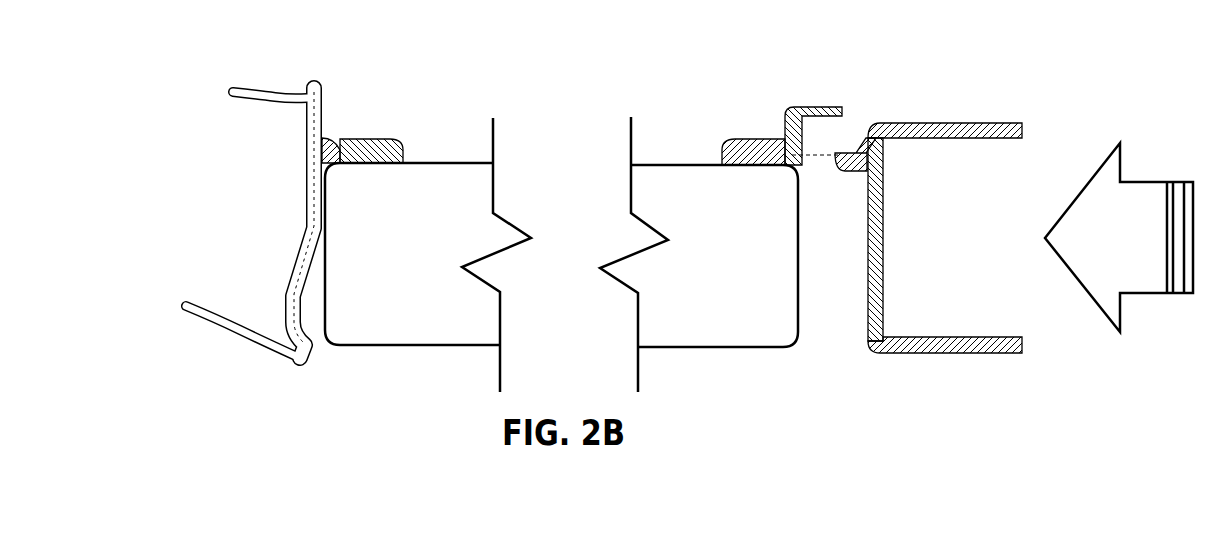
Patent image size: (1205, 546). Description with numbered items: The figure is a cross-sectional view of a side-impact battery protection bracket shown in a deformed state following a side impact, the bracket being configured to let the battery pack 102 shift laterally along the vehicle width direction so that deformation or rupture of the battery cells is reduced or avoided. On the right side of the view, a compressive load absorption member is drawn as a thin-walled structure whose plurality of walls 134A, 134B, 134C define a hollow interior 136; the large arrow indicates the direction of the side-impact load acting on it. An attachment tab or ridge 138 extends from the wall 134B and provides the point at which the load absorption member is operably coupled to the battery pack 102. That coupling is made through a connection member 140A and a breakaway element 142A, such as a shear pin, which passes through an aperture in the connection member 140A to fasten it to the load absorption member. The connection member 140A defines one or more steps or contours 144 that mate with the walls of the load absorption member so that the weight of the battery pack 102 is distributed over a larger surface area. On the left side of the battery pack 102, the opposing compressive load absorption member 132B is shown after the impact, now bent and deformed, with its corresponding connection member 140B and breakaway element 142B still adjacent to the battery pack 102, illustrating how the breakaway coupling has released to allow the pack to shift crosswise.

The battery pack 102 is at (755, 256).
The compressive load absorption member 132B is at (258, 90).
The wall 134A is at (942, 123).
The wall 134B is at (868, 283).
The wall 134C is at (947, 353).
The hollow interior 136 is at (932, 241).
The attachment tab or ridge 138 is at (866, 152).
The connection member 140A is at (752, 138).
The connection member 140B is at (375, 137).
The breakaway element 142A is at (788, 108).
The breakaway element 142B is at (338, 133).
The steps or contours 144 is at (810, 117).